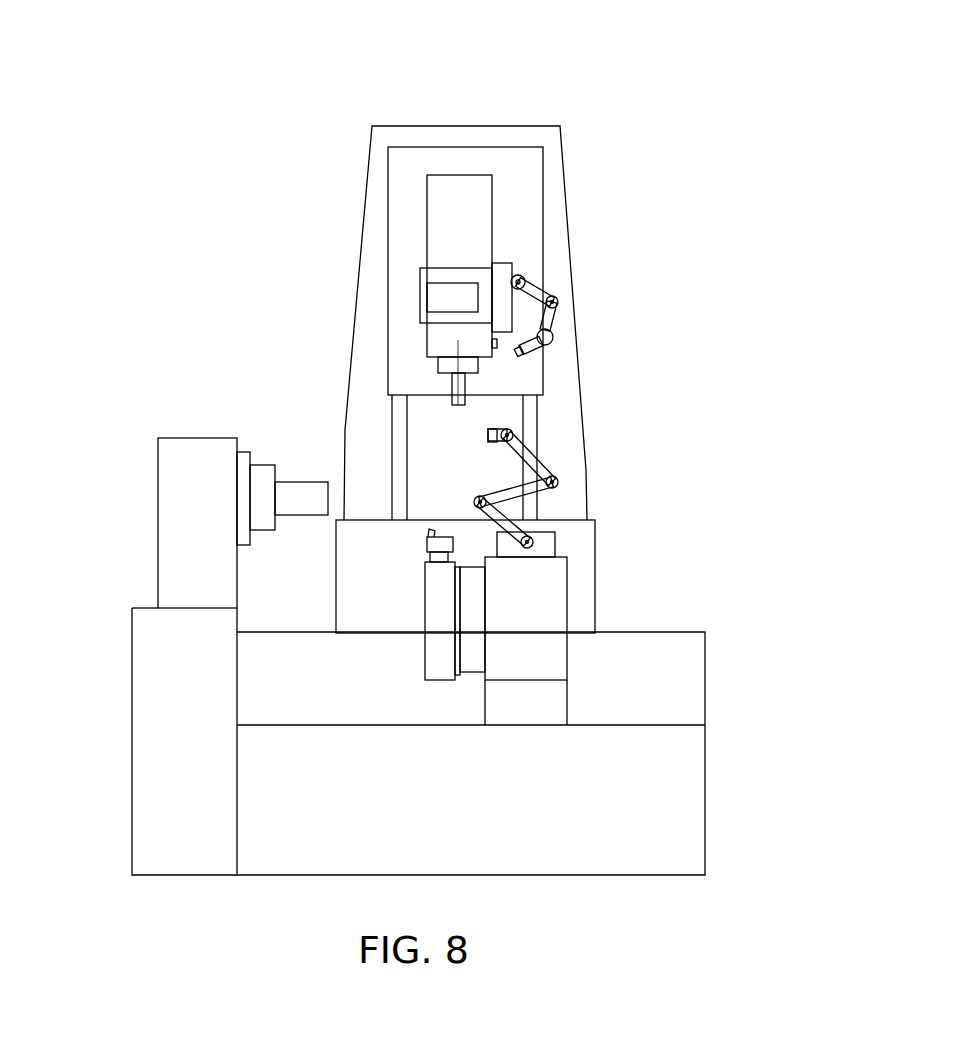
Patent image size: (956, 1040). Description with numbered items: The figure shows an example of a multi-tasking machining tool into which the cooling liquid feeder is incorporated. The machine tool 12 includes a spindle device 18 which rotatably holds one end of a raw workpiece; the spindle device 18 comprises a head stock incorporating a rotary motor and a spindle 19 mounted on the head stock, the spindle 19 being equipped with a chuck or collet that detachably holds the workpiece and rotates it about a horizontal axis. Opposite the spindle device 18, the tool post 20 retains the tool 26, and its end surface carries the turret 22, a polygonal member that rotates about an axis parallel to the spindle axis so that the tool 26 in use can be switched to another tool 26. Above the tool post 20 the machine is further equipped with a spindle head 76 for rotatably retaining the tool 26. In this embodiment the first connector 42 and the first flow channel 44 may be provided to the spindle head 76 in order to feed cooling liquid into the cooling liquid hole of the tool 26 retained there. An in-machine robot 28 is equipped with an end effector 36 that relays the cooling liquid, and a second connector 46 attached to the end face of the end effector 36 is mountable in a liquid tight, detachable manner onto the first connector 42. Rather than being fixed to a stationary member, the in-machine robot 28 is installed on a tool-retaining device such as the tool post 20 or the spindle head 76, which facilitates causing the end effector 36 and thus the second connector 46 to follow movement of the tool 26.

The machine tool 12 is at (573, 80).
The spindle device 18 is at (143, 527).
The spindle 19 is at (262, 470).
The tool post 20 is at (560, 598).
The turret 22 is at (425, 665).
The tool 26 is at (450, 402).
The in-machine robot 28 is at (548, 285).
The end effector 36 is at (545, 355).
The first connector 42 is at (498, 349).
The first flow channel 44 is at (457, 345).
The second connector 46 is at (526, 355).
The spindle head 76 is at (440, 185).